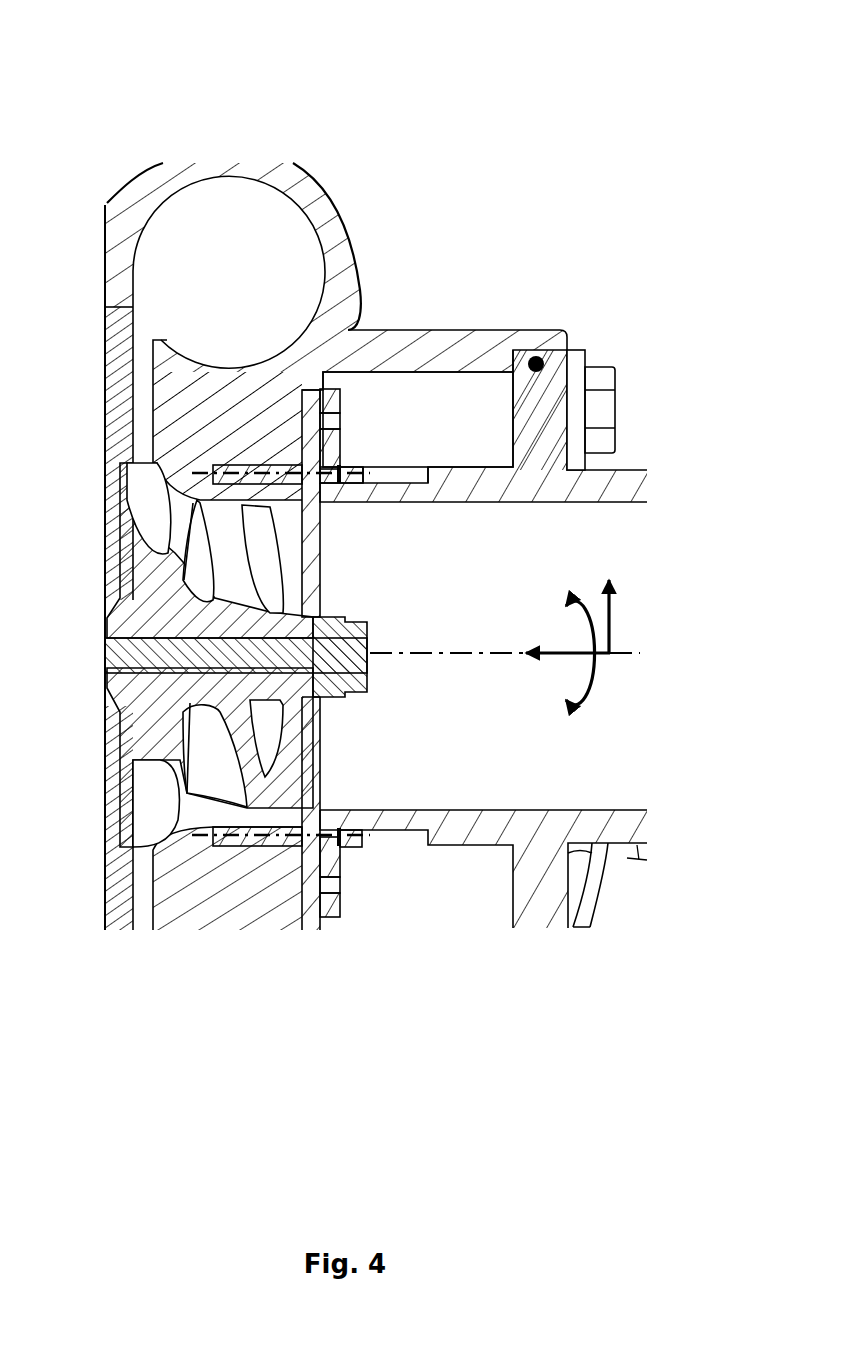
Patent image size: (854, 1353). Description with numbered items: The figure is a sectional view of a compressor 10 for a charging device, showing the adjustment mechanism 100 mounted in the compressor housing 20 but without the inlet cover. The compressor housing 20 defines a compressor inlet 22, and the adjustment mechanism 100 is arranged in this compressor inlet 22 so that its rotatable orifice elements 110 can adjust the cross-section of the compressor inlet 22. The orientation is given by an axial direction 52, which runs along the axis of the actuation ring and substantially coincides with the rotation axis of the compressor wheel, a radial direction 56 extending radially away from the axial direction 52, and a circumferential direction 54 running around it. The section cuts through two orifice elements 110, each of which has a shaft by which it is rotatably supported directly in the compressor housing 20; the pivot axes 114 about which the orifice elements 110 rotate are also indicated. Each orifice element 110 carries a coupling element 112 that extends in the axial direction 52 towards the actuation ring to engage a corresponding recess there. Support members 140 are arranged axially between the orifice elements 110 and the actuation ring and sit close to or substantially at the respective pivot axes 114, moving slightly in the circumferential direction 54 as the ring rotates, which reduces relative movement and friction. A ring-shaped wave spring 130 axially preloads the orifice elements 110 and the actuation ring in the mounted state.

The compressor 10 is at (194, 124).
The compressor housing 20 is at (340, 352).
The compressor inlet 22 is at (437, 712).
The axial direction 52 is at (564, 634).
The circumferential direction 54 is at (590, 661).
The radial direction 56 is at (629, 608).
The adjustment mechanism 100 is at (384, 443).
The orifice elements 110 is at (320, 513).
The coupling element 112 is at (340, 427).
The pivot axes 114 is at (250, 474).
The spring 130 is at (310, 510).
The support members 140 is at (350, 470).